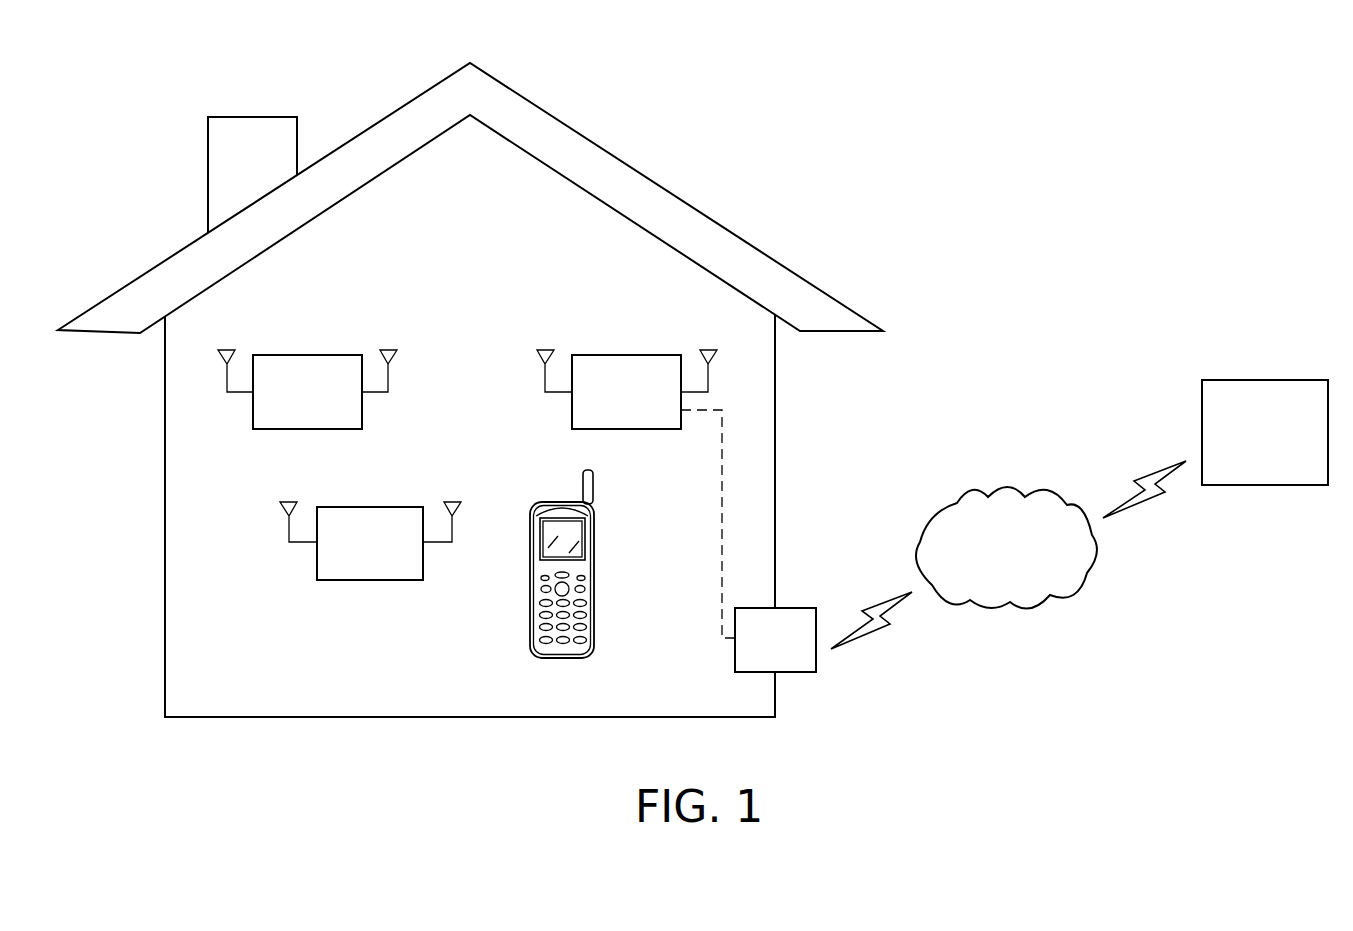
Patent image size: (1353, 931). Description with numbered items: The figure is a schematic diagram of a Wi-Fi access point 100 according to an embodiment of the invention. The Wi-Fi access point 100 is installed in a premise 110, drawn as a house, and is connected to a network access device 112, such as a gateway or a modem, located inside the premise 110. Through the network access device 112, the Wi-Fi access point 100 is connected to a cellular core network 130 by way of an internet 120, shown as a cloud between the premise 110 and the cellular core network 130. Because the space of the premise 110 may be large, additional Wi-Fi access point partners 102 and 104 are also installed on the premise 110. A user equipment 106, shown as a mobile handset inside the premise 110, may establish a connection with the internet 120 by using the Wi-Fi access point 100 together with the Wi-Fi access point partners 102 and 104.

The Wi-Fi access point 100 is at (602, 405).
The Wi-Fi access point partner 102 is at (283, 405).
The Wi-Fi access point partner 104 is at (346, 556).
The user equipment 106 is at (563, 660).
The premise 110 is at (696, 210).
The network access device 112 is at (752, 654).
The internet 120 is at (1003, 487).
The cellular core network 130 is at (1268, 378).